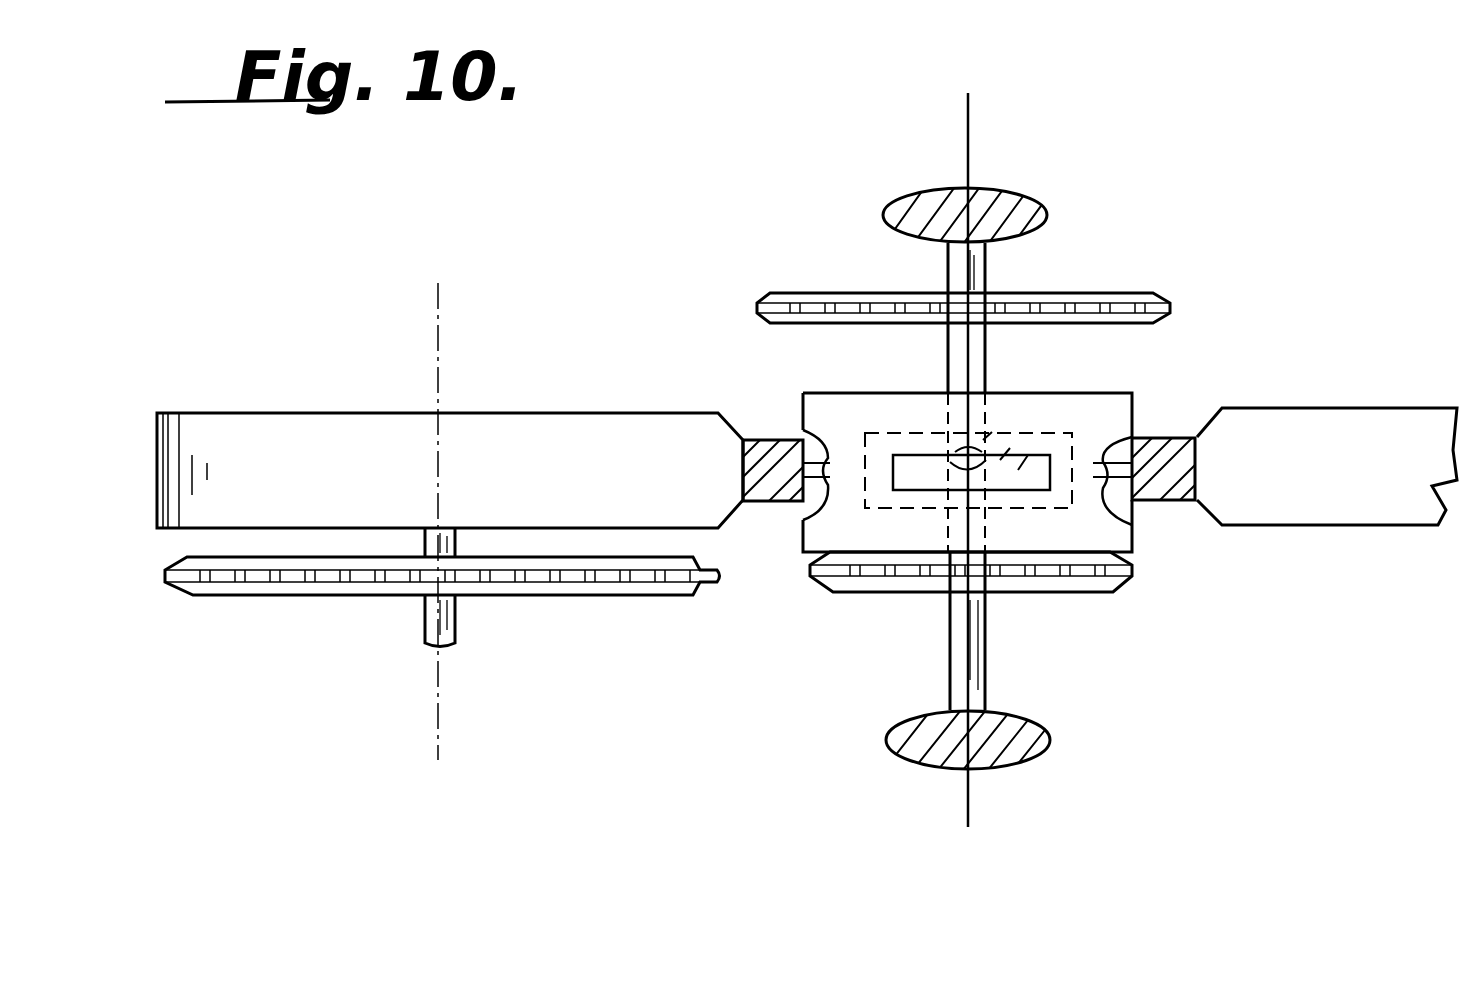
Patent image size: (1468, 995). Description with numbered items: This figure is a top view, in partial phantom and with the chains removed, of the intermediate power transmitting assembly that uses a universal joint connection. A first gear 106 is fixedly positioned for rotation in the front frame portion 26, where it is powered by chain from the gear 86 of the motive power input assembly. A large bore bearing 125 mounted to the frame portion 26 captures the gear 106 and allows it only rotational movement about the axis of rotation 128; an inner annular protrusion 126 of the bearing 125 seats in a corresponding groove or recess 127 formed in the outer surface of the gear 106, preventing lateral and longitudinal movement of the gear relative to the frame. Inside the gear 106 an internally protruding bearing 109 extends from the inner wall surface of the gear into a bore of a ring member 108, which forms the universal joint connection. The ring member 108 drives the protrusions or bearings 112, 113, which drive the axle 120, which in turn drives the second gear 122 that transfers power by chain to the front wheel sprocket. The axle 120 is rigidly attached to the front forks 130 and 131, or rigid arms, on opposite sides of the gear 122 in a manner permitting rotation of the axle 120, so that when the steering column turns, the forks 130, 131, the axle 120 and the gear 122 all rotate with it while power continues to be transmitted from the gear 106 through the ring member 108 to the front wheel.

The front frame portion 26 is at (287, 433).
The gear of the motive power input assembly 86 is at (268, 575).
The first gear 106 is at (1138, 547).
The ring member 108 is at (885, 435).
The internally protruding bearing 109 is at (985, 440).
The protrusion or bearing 112 is at (922, 477).
The protrusion or bearing 113 is at (1038, 447).
The axle 120 is at (982, 275).
The second gear 122 is at (772, 293).
The large bore bearing 125 is at (783, 495).
The inner annular protrusion 126 is at (757, 437).
The groove or recess 127 is at (815, 460).
The axis of rotation 128 is at (968, 777).
The front fork 130 is at (900, 753).
The front fork 131 is at (927, 192).